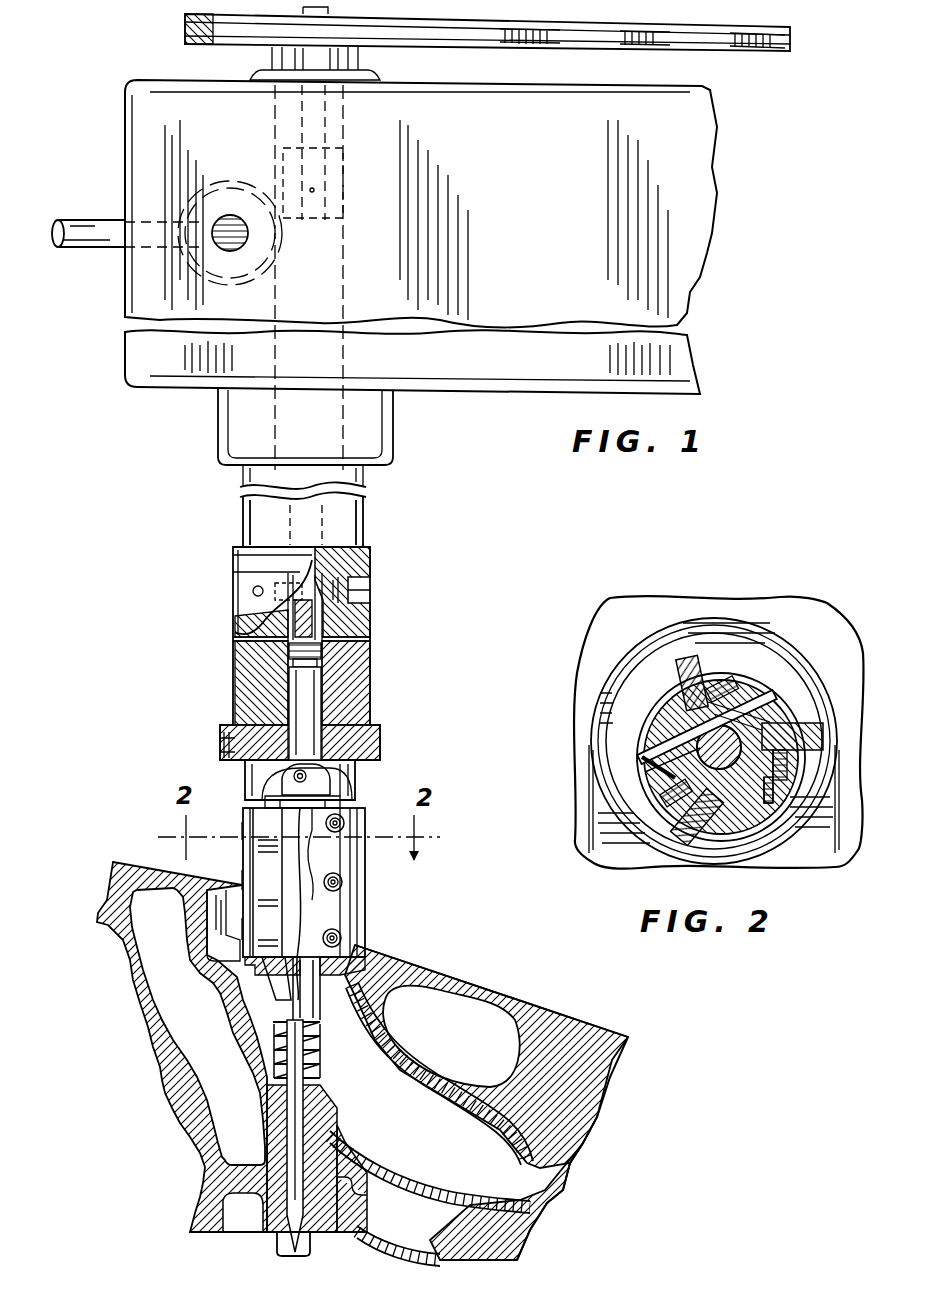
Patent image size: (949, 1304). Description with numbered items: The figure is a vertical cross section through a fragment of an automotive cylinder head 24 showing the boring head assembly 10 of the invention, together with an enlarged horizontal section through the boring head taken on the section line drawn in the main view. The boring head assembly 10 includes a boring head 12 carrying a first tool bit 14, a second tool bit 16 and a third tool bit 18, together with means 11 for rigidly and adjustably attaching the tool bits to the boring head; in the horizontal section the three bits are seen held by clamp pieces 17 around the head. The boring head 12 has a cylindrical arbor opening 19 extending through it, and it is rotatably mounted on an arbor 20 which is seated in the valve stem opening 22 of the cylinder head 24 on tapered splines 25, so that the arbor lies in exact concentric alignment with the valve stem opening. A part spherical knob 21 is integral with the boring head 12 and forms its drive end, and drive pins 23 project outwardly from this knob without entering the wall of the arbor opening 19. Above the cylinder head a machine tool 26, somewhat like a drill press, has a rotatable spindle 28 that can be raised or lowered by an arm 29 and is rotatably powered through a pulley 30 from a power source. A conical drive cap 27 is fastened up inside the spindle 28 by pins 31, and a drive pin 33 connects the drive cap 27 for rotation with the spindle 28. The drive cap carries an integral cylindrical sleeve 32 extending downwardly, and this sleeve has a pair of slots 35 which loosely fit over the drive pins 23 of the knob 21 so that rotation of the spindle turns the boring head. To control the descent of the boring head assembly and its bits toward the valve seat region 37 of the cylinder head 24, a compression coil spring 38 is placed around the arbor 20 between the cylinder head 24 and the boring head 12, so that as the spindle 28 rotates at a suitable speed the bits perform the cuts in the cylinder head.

In FIG. 1, the boring head assembly 10 is at (366, 904).
In FIG. 1, the means for attaching the tool bits 11 is at (345, 823).
In FIG. 2, the means for attaching the tool bits 11 is at (735, 685).
In FIG. 1, the boring head 12 is at (358, 941).
In FIG. 2, the boring head 12 is at (772, 700).
In FIG. 2, the first tool bit 14 is at (690, 660).
In FIG. 1, the second tool bit 16 is at (362, 868).
In FIG. 2, the second tool bit 16 is at (800, 741).
In FIG. 2, the clamp jaws 17 is at (675, 664).
In FIG. 1, the third tool bit 18 is at (262, 932).
In FIG. 2, the third tool bit 18 is at (685, 835).
In FIG. 2, the cylindrical arbor opening 19 is at (698, 745).
In FIG. 1, the arbor 20 is at (318, 1042).
In FIG. 1, the part spherical knob 21 is at (262, 770).
In FIG. 1, the valve stem opening 22 is at (278, 1246).
In FIG. 1, the drive pins 23 is at (326, 854).
In FIG. 1, the cylinder head 24 is at (450, 968).
In FIG. 1, the tapered splines 25 is at (305, 1118).
In FIG. 1, the machine tool 26 is at (165, 400).
In FIG. 1, the conical drive cap 27 is at (332, 668).
In FIG. 1, the rotatable spindle 28 is at (363, 522).
In FIG. 1, the arm 29 is at (95, 228).
In FIG. 1, the pulley 30 is at (222, 30).
In FIG. 1, the pins 31 is at (262, 650).
In FIG. 1, the cylindrical sleeve 32 is at (355, 778).
In FIG. 1, the drive pin 33 is at (235, 745).
In FIG. 1, the slots 35 is at (302, 904).
In FIG. 1, the valve seat region 37 is at (395, 965).
In FIG. 1, the compression coil spring 38 is at (322, 1062).